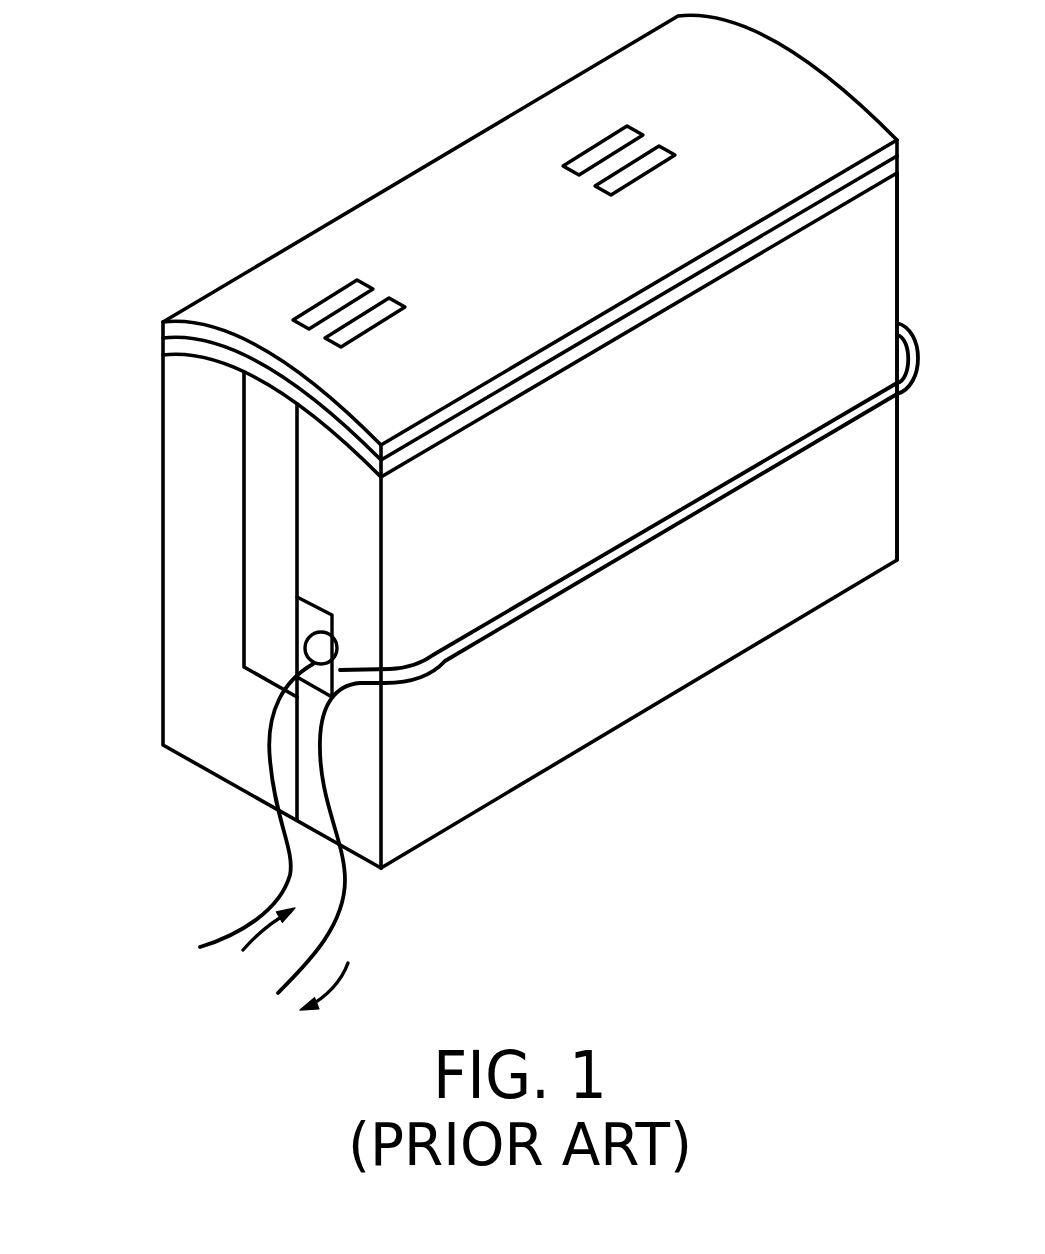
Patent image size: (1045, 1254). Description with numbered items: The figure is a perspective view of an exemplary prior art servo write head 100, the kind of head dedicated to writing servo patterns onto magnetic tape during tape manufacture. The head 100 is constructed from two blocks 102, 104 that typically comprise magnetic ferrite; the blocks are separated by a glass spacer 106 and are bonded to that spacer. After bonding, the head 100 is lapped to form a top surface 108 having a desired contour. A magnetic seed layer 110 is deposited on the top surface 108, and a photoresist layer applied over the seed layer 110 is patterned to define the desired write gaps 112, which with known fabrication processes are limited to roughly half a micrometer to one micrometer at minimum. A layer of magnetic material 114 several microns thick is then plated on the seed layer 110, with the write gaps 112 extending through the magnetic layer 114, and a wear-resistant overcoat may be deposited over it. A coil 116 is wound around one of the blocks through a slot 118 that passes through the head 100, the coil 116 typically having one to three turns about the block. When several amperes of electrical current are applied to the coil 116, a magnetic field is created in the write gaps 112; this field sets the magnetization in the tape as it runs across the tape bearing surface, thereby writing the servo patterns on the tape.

The servo write head 100 is at (292, 88).
The block 102 is at (193, 505).
The block 104 is at (353, 827).
The glass spacer 106 is at (270, 662).
The top surface 108 is at (205, 377).
The magnetic seed layer 110 is at (687, 292).
The write gaps 112 is at (616, 137).
The magnetic layer 114 is at (518, 133).
The coil 116 is at (593, 567).
The slot 118 is at (337, 642).